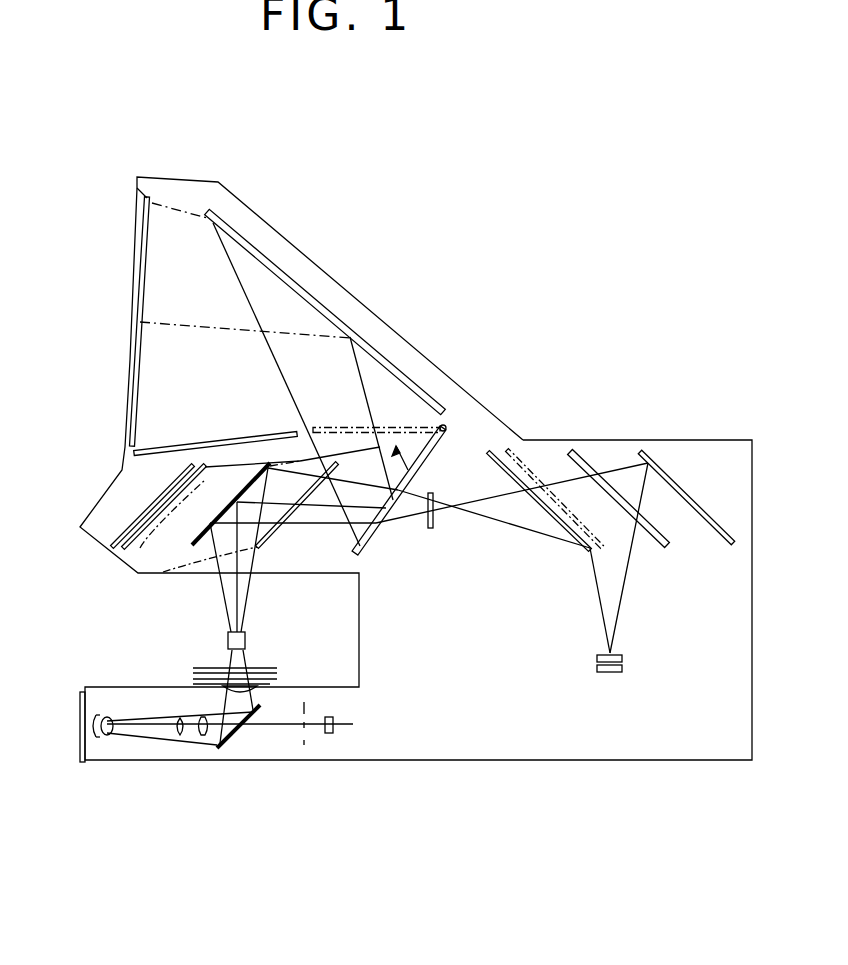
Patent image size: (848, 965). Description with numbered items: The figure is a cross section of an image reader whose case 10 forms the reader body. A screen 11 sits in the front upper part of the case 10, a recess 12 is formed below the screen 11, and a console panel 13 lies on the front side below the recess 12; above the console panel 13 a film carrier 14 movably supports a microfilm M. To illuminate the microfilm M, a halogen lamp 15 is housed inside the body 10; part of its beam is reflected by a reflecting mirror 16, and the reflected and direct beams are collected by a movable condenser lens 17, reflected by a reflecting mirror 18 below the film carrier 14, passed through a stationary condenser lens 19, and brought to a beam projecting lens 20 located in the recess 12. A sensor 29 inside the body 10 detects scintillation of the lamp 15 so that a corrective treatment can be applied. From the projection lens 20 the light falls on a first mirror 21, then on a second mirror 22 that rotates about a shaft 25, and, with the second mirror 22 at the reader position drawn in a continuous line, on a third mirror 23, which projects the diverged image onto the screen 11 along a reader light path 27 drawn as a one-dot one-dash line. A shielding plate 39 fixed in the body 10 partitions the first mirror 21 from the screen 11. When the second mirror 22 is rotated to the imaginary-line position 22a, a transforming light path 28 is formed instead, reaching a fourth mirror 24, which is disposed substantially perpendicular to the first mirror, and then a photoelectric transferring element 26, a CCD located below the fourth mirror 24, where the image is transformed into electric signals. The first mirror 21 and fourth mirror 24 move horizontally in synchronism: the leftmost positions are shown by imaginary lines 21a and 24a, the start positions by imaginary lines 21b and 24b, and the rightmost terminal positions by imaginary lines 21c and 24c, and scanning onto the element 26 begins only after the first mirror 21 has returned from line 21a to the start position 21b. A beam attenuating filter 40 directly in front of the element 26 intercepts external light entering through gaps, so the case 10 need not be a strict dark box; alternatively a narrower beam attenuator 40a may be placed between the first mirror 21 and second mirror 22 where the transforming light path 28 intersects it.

The case 10 is at (445, 762).
The screen 11 is at (137, 280).
The recess 12 is at (331, 612).
The console panel 13 is at (80, 703).
The film carrier 14 is at (265, 668).
The halogen lamp 15 is at (107, 750).
The reflecting mirror 16 is at (87, 733).
The movable condenser lens 17 is at (190, 740).
The reflecting mirror 18 is at (237, 740).
The stationary condenser lens 19 is at (220, 690).
The beam projecting lens 20 is at (227, 637).
The microfilm M is at (190, 670).
The first mirror 21 is at (266, 470).
The imaginary line 21a is at (135, 485).
The imaginary line 21b is at (125, 549).
The imaginary line 21c is at (165, 568).
The second mirror 22 is at (423, 458).
The imaginary line 22a is at (388, 416).
The third mirror 23 is at (337, 317).
The fourth mirror 24 is at (570, 452).
The imaginary line 24a is at (493, 447).
The imaginary line 24b is at (538, 470).
The imaginary line 24c is at (712, 506).
The shaft 25 is at (447, 428).
The photoelectric transferring element 26 is at (623, 671).
The reader light path 27 is at (247, 293).
The transforming light path 28 is at (525, 528).
The sensor 29 is at (328, 735).
The shielding plate 39 is at (150, 447).
The beam attenuating filter 40 is at (623, 657).
The beam attenuator 40a is at (431, 528).